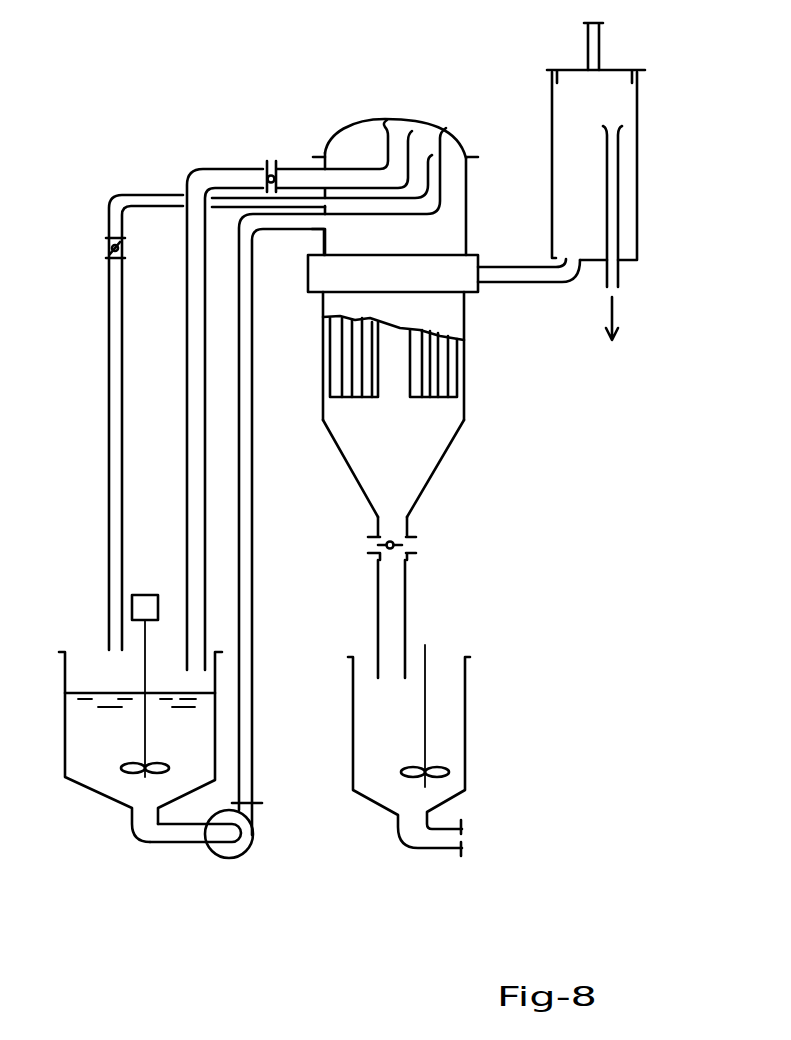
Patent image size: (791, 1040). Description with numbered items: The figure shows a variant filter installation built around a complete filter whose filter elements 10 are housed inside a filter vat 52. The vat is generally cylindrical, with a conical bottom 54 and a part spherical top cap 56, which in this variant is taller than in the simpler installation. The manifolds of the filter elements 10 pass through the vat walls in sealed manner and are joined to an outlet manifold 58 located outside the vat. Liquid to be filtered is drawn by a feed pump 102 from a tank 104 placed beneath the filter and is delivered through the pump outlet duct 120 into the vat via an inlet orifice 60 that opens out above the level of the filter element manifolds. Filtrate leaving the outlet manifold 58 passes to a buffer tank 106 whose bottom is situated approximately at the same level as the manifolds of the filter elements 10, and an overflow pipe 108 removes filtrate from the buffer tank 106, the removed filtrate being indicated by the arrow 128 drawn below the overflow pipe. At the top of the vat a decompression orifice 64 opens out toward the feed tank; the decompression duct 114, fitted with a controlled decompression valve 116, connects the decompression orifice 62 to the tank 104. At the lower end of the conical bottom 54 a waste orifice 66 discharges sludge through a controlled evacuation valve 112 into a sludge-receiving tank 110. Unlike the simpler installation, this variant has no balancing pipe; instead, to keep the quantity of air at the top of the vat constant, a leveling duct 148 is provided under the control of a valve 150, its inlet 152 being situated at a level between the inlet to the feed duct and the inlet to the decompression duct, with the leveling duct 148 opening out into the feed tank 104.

The filter elements 10 is at (337, 384).
The filter vat 52 is at (464, 374).
The conical bottom 54 is at (438, 471).
The top cap 56 is at (428, 122).
The outlet manifold 58 is at (464, 270).
The inlet orifice 60 is at (318, 226).
The decompression orifice 62 is at (304, 178).
The decompression orifice 64 is at (388, 121).
The waste orifice 66 is at (408, 527).
The feed pump 102 is at (238, 847).
The tank 104 is at (93, 772).
The buffer tank 106 is at (563, 172).
The overflow pipe 108 is at (612, 207).
The sludge-receiving tank 110 is at (450, 718).
The evacuation valve 112 is at (413, 546).
The decompression duct 114 is at (192, 370).
The decompression valve 116 is at (268, 163).
The outlet duct 120 is at (252, 579).
The gas outlet arrow 128 is at (623, 336).
The leveling duct 148 is at (113, 303).
The valve 150 is at (107, 250).
The inlet 152 is at (448, 129).